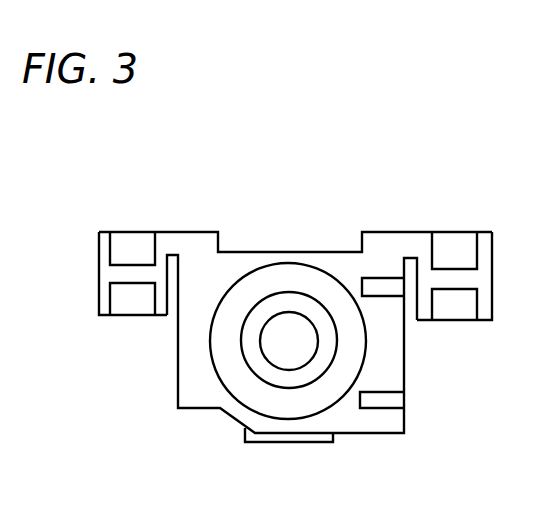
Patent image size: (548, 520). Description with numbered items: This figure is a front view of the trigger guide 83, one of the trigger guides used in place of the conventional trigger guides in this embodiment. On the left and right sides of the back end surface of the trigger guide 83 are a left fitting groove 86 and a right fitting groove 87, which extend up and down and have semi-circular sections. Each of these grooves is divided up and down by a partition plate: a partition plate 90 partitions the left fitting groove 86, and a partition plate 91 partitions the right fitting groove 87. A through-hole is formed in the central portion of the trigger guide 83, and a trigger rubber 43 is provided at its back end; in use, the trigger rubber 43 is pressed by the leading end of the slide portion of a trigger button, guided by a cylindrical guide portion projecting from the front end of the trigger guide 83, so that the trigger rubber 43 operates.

The trigger guide 83 is at (300, 320).
The left fitting groove 86 is at (131, 283).
The right fitting groove 87 is at (461, 273).
The partition plate 90 is at (133, 282).
The partition plate 91 is at (453, 282).
The trigger rubber 43 is at (310, 403).